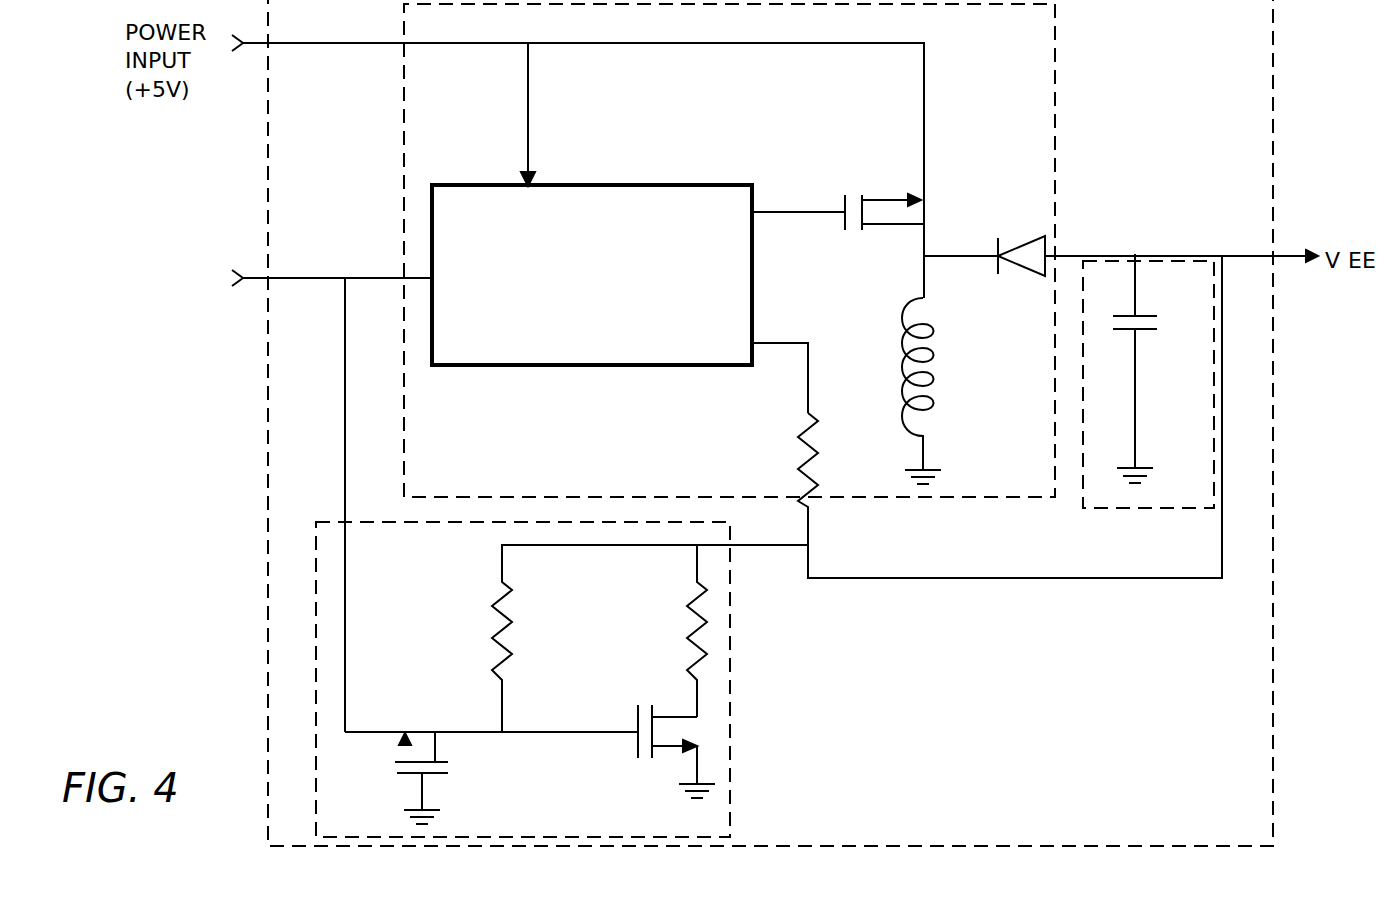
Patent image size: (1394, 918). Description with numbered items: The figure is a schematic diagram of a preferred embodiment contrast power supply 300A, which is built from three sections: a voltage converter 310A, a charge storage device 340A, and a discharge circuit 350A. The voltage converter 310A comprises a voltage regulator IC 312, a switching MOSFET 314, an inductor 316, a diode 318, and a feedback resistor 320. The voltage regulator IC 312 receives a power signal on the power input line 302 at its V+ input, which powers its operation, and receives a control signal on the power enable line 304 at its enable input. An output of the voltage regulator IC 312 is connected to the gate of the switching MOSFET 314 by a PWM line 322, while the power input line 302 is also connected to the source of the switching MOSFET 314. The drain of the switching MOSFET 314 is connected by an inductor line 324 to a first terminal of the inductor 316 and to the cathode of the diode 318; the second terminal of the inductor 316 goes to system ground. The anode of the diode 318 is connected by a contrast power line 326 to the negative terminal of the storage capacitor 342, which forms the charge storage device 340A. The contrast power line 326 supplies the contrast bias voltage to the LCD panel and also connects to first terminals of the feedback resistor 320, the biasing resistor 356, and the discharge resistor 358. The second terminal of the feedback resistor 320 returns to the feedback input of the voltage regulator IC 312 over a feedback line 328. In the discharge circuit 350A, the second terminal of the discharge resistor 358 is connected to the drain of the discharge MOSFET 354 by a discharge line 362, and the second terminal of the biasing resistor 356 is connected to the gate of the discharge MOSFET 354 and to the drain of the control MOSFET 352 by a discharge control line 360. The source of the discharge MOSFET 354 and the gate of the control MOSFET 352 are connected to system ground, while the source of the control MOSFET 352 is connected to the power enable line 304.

The contrast power supply 300A is at (1160, 43).
The power input line 302 is at (467, 43).
The power enable line 304 is at (291, 278).
The voltage converter 310A is at (403, 143).
The voltage regulator IC 312 is at (607, 185).
The switching MOSFET 314 is at (905, 223).
The inductor 316 is at (930, 400).
The diode 318 is at (1043, 235).
The feedback resistor 320 is at (812, 422).
The PWM line 322 is at (793, 212).
The inductor line 324 is at (957, 257).
The contrast power line 326 is at (1160, 254).
The feedback line 328 is at (775, 343).
The charge storage device 340A is at (1187, 508).
The storage capacitor 342 is at (1140, 314).
The discharge circuit 350A is at (738, 818).
The control MOSFET 352 is at (440, 743).
The discharge MOSFET 354 is at (683, 718).
The biasing resistor 356 is at (502, 598).
The discharge resistor 358 is at (695, 598).
The discharge control line 360 is at (520, 732).
The discharge line 362 is at (700, 695).